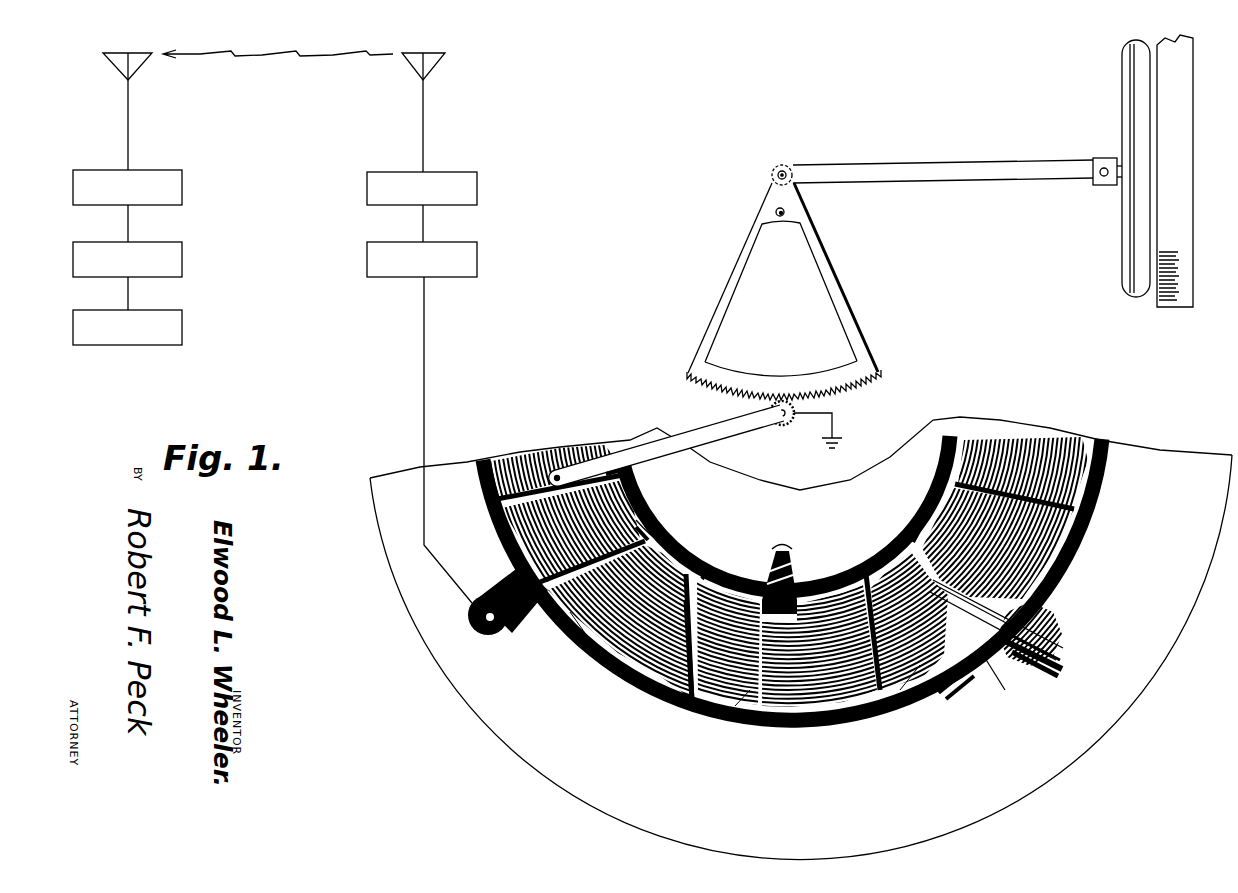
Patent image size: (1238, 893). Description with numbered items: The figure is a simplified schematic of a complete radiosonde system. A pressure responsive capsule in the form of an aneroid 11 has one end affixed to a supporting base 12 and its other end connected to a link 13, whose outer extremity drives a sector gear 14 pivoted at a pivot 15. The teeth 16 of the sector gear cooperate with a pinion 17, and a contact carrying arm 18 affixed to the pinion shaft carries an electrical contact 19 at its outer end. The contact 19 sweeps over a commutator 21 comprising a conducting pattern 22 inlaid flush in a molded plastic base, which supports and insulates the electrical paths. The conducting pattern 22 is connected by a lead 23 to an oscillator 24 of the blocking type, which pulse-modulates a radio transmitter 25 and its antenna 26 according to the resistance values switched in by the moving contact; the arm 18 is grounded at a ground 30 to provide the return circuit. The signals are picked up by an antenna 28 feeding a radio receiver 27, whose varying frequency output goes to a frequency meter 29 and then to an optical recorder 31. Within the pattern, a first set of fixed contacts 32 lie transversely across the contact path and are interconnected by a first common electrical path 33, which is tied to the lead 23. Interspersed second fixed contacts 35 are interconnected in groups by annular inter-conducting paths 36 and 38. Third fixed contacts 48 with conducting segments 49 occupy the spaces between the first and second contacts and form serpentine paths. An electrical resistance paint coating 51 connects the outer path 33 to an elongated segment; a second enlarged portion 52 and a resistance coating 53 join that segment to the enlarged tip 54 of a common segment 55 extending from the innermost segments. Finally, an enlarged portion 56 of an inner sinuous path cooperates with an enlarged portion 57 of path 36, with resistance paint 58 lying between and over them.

The aneroid 11 is at (1122, 256).
The supporting base 12 is at (1190, 243).
The link 13 is at (967, 171).
The sector gear 14 is at (848, 304).
The pivot 15 is at (773, 212).
The teeth 16 is at (862, 375).
The pinion 17 is at (788, 427).
The contact carrying arm 18 is at (717, 426).
The electrical contact 19 is at (560, 470).
The commutator 21 is at (1158, 578).
The conducting pattern 22 is at (1128, 552).
The lead 23 is at (426, 352).
The oscillator 24 is at (477, 247).
The radio transmitter 25 is at (477, 178).
The antenna 26 is at (426, 103).
The radio receiver 27 is at (182, 180).
The antenna 28 is at (131, 121).
The frequency meter 29 is at (182, 258).
The ground 30 is at (836, 425).
The recorder 31 is at (182, 320).
The first fixed contacts 32 is at (1098, 488).
The first common electrical path 33 is at (677, 708).
The second fixed electrical contacts 35 is at (935, 495).
The annular inter-conducting path 36 is at (645, 520).
The annular inter-conducting path 38 is at (893, 540).
The third fixed contacts 48 is at (908, 695).
The conducting segments 49 is at (1003, 684).
The electrical resistance paint coating 51 is at (955, 698).
The second enlarged portion 52 is at (1064, 663).
The resistance coating 53 is at (1048, 672).
The enlarged tip 54 is at (1062, 636).
The common segment 55 is at (1060, 616).
The enlarged portion 56 is at (797, 575).
The enlarged portion 57 is at (779, 545).
The resistance paint 58 is at (790, 555).